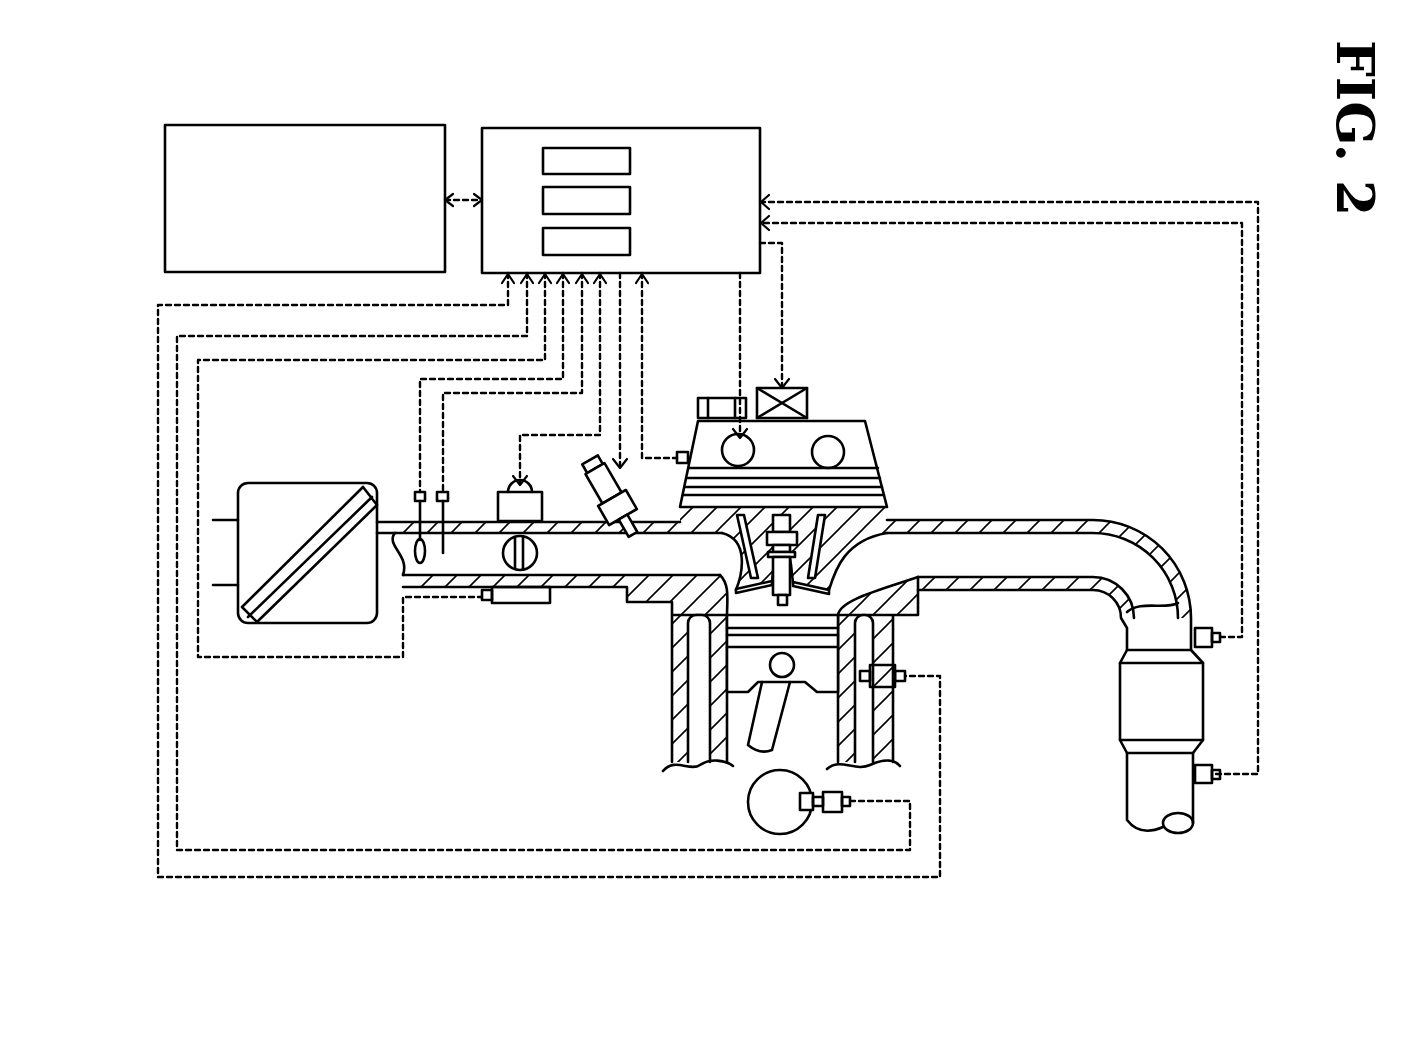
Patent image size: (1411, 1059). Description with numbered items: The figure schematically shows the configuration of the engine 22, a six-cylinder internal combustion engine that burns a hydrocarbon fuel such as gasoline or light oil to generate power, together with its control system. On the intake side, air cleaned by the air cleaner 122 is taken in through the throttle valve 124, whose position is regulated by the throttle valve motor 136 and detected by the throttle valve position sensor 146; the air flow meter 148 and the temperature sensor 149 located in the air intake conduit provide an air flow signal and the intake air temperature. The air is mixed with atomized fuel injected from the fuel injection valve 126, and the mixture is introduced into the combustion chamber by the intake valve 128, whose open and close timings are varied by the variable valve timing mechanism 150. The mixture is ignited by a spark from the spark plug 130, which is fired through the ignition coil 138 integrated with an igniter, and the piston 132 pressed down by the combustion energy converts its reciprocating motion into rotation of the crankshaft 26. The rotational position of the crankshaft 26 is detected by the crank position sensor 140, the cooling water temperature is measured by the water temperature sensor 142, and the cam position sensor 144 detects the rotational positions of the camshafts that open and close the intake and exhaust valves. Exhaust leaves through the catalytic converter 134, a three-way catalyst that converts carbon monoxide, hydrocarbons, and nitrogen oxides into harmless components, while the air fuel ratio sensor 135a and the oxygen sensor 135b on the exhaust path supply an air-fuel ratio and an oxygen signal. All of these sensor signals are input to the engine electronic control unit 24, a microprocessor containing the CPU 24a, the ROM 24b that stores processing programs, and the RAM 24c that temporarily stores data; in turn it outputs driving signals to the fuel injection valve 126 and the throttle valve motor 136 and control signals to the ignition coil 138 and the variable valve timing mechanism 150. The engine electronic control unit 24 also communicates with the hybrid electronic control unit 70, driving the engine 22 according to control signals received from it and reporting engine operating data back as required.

The engine 22 is at (828, 365).
The engine electronic control unit 24 is at (621, 173).
The CPU 24a is at (632, 162).
The ROM 24b is at (632, 202).
The RAM 24c is at (632, 243).
The crankshaft 26 is at (748, 802).
The hybrid electronic control unit 70 is at (307, 124).
The air cleaner 122 is at (307, 483).
The throttle valve 124 is at (540, 536).
The fuel injection valve 126 is at (600, 522).
The intake valve 128 is at (770, 572).
The spark plug 130 is at (782, 585).
The piston 132 is at (745, 663).
The catalytic converter 134 is at (1130, 687).
The air fuel ratio sensor 135a is at (1205, 625).
The oxygen sensor 135b is at (1207, 786).
The throttle valve motor 136 is at (498, 490).
The ignition coil 138 is at (808, 403).
The crank position sensor 140 is at (836, 813).
The water temperature sensor 142 is at (893, 666).
The cam position sensor 144 is at (678, 452).
The throttle valve position sensor 146 is at (522, 604).
The air flow meter 148 is at (416, 490).
The temperature sensor 149 is at (449, 490).
The variable valve timing mechanism 150 is at (878, 460).